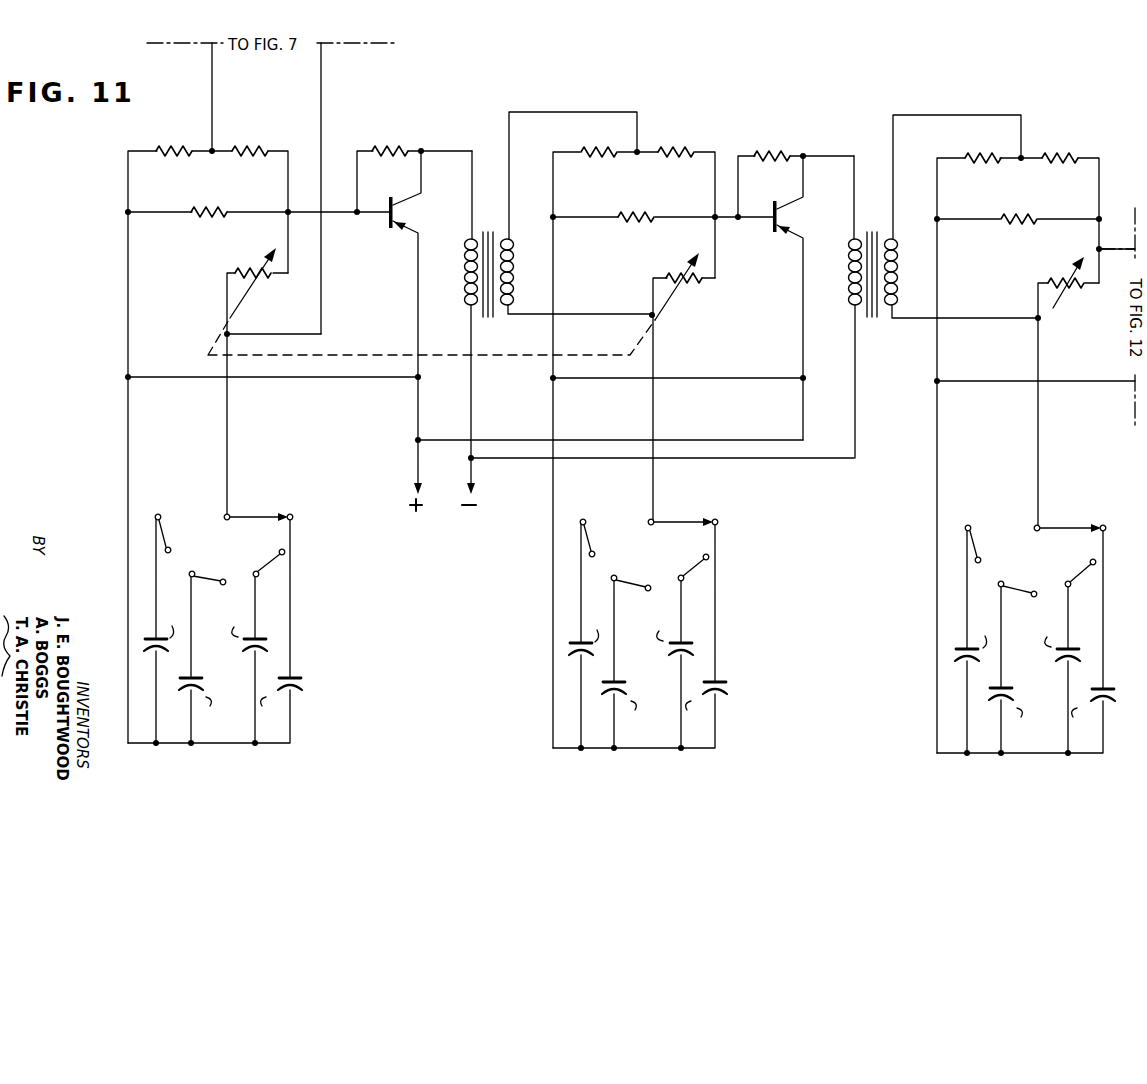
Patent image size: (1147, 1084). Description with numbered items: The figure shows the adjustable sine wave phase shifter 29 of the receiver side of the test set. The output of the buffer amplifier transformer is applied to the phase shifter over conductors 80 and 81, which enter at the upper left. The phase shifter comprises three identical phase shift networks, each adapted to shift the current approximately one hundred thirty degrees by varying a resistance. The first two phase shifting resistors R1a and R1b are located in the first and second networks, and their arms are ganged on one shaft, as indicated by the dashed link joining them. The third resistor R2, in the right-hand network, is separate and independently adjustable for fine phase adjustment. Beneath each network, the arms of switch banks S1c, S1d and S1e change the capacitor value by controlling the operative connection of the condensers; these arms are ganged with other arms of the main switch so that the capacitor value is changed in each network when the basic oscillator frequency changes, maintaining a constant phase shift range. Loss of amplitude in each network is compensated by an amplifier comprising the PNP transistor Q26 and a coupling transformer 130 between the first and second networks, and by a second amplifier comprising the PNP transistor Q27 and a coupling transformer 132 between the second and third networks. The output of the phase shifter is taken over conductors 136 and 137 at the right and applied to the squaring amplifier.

The sine wave phase shifter 29 is at (654, 95).
The conductor 80 is at (321, 66).
The conductor 81 is at (212, 66).
The coupling transformer 130 is at (503, 222).
The coupling transformer 132 is at (887, 222).
The conductor 136 is at (1114, 249).
The conductor 137 is at (1117, 385).
The PNP transistor Q26 is at (388, 228).
The PNP transistor Q27 is at (770, 231).
The phase shifting resistor R1a is at (243, 261).
The phase shifting resistor R1b is at (673, 265).
The phase shifting resistor R2 is at (1051, 269).
The switch bank S1c is at (215, 620).
The switch bank S1d is at (640, 634).
The switch bank S1e is at (1026, 640).